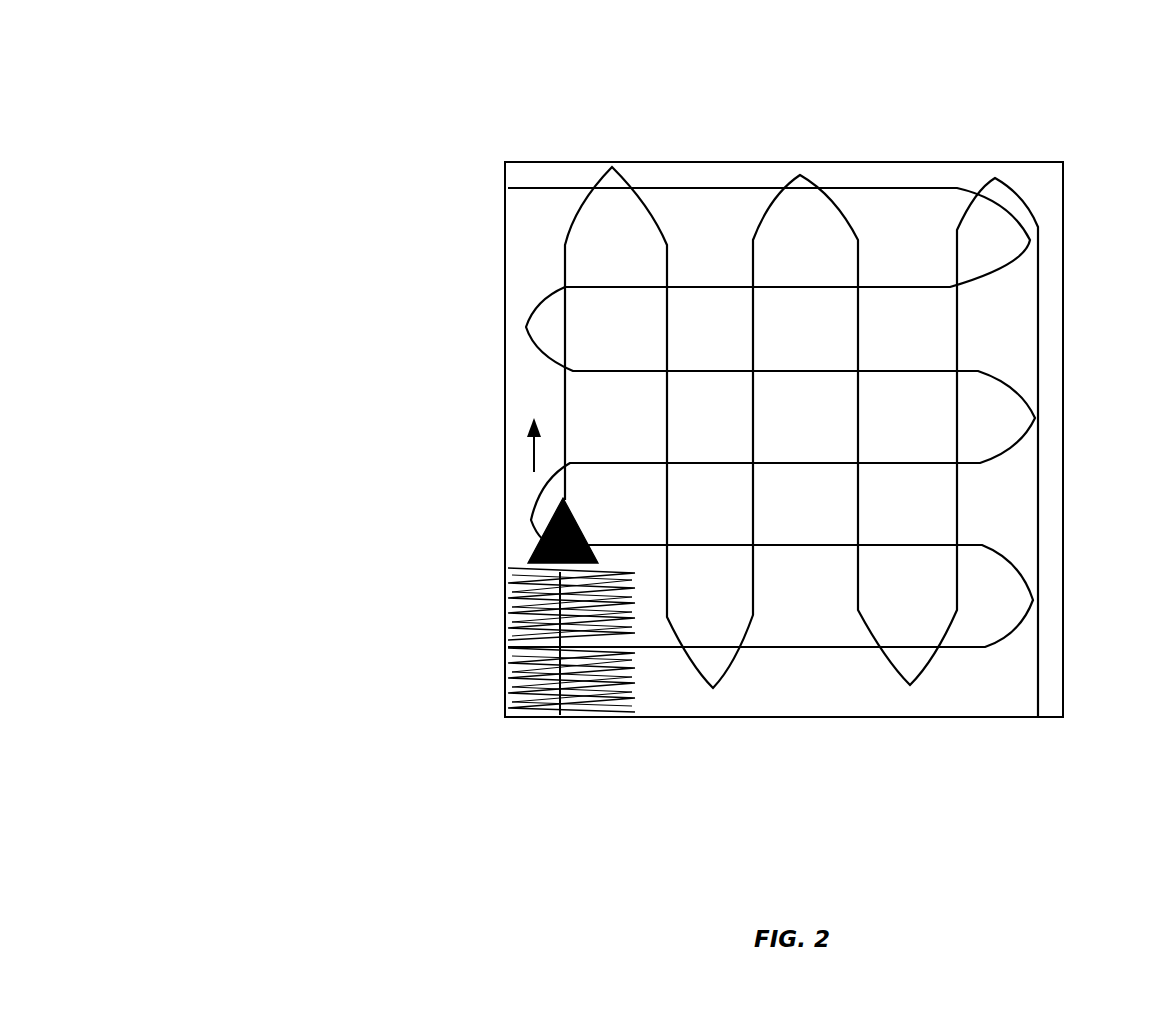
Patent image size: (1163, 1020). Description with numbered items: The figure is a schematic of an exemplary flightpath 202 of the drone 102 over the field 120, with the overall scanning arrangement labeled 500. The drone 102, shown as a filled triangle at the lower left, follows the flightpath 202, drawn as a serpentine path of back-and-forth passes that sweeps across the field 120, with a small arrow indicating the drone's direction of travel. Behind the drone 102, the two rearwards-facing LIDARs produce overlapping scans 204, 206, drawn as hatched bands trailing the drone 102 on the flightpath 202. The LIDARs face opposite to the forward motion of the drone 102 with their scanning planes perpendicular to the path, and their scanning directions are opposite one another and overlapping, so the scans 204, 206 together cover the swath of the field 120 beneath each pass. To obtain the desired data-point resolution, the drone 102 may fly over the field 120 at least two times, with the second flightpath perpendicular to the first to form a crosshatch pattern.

The thermal management system 500 is at (128, 62).
The field 120 is at (1037, 190).
The flightpath 202 is at (534, 449).
The drone 102 is at (535, 548).
The overlapping scan 204 is at (520, 590).
The overlapping scan 206 is at (525, 624).